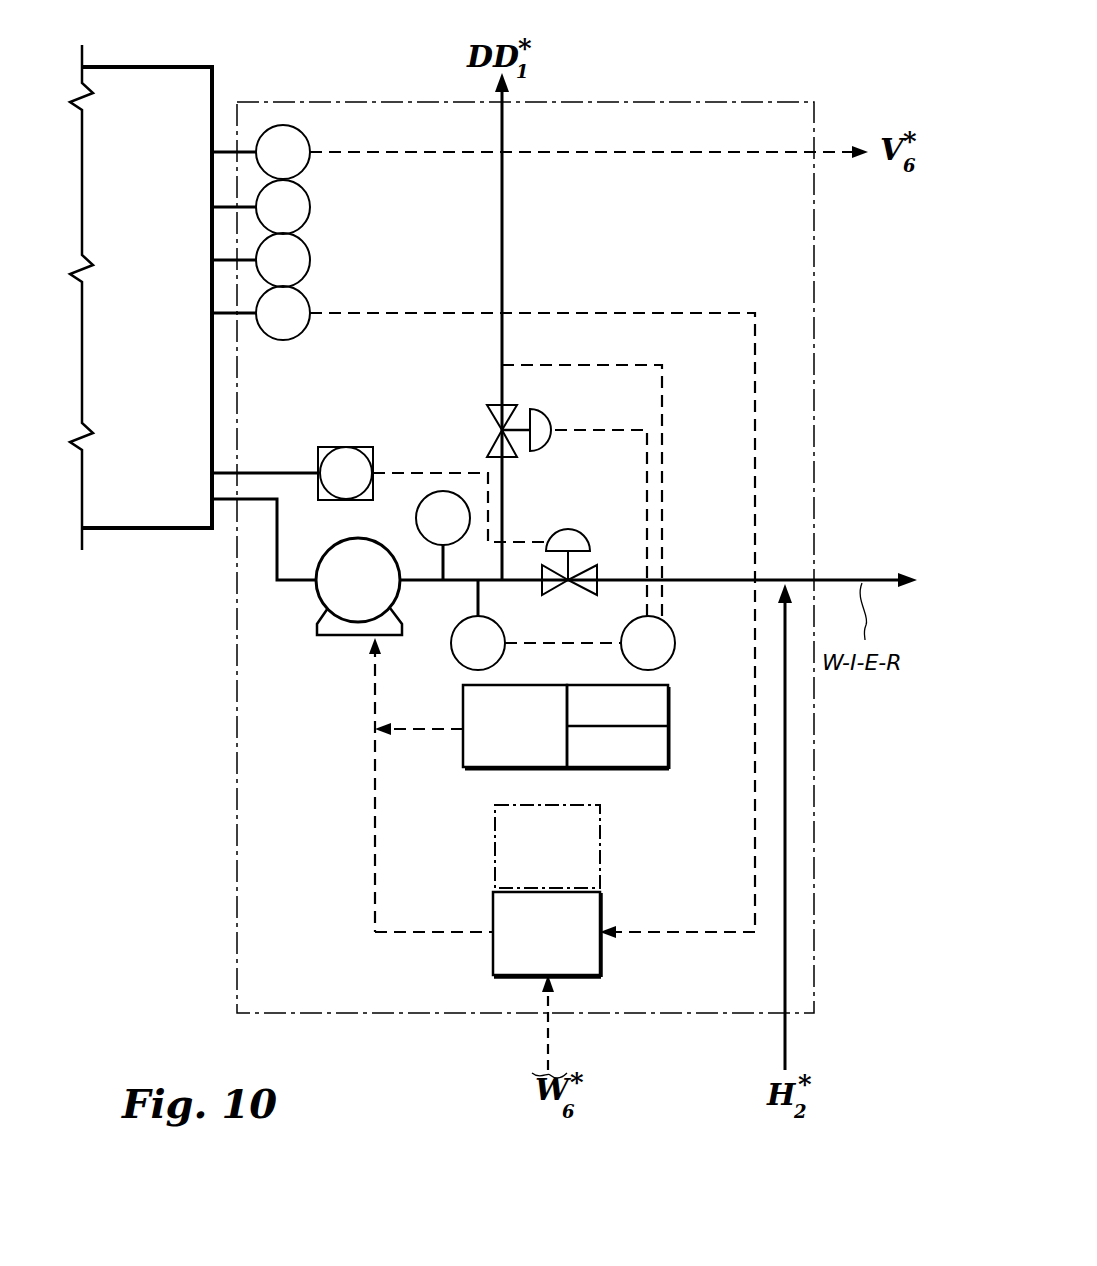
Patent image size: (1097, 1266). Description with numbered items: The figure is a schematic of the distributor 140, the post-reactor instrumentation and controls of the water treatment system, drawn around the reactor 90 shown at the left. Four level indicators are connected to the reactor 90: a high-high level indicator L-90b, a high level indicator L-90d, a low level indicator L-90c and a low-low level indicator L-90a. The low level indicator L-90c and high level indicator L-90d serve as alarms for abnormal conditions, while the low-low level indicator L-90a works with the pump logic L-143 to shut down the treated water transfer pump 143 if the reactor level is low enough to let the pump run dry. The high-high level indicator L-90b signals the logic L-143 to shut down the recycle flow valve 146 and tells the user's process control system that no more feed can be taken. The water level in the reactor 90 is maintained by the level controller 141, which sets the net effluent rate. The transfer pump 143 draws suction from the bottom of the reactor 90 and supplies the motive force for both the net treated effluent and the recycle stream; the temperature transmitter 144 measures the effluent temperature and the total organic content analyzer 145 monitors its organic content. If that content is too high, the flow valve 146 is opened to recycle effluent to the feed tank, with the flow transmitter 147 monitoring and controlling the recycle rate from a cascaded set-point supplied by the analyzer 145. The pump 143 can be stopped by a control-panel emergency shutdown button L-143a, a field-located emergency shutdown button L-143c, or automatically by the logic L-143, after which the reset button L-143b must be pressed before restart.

The reactor 90 is at (127, 530).
The distributor 140 is at (600, 100).
The high-high level indicator L-90b is at (307, 137).
The high level indicator L-90d is at (307, 188).
The low level indicator L-90c is at (307, 242).
The low-low level indicator L-90a is at (307, 292).
The level controller 141 is at (327, 447).
The treated water transfer pump 143 is at (323, 603).
The temperature transmitter 144 is at (416, 520).
The total organic content analyzer 145 is at (503, 628).
The flow valve 146 is at (548, 415).
The flow transmitter 147 is at (673, 628).
The control-panel-located emergency shutdown button L-143a is at (507, 768).
The reset button L-143b is at (625, 768).
The field-located emergency shut-down button L-143c is at (600, 848).
The feed pump logic L-143 is at (600, 963).